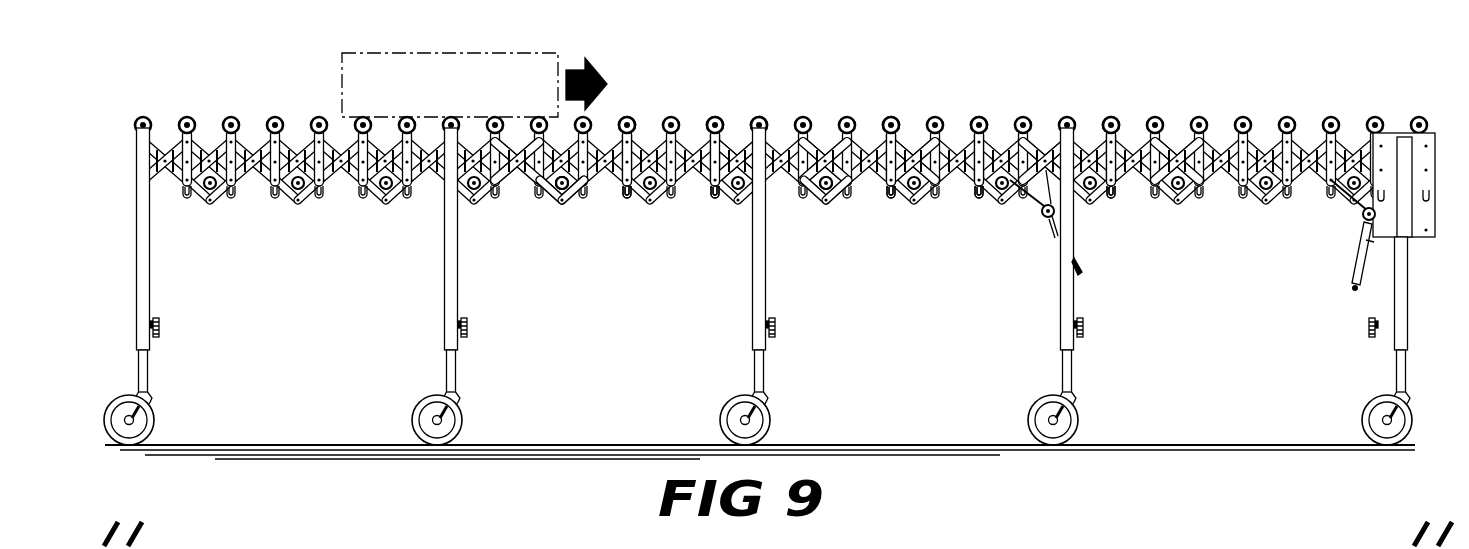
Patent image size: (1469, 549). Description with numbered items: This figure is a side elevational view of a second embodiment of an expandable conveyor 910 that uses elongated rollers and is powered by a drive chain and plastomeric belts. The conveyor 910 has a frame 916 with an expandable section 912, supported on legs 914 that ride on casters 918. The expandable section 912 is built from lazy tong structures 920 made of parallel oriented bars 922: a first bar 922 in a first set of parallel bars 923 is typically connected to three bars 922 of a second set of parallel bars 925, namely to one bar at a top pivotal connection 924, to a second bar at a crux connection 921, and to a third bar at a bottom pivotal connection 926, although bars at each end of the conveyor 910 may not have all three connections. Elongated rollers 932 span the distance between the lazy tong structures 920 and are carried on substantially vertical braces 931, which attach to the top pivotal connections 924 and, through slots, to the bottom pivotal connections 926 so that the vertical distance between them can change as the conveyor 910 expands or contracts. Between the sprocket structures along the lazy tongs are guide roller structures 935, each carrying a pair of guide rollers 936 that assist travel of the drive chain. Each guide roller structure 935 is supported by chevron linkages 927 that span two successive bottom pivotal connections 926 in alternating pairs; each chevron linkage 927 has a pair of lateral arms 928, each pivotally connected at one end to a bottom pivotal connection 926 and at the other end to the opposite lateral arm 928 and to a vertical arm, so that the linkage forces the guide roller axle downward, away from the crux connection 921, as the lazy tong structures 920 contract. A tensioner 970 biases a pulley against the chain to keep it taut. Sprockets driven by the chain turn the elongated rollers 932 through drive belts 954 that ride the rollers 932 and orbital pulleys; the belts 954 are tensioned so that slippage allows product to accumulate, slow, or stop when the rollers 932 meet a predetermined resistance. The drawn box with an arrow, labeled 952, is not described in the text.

The conveyor 910 is at (1283, 85).
The expandable section 912 is at (997, 131).
The legs 914 is at (145, 287).
The frame 916 is at (1385, 237).
The casters 918 is at (150, 412).
The lazy tong structures 920 is at (1039, 131).
The crux connection 921 is at (1097, 140).
The parallel oriented bars 922 is at (1140, 136).
The first set of parallel bars 923 is at (823, 133).
The top pivotal connection 924 is at (727, 135).
The second set of parallel bars 925 is at (917, 133).
The bottom pivotal connection 926 is at (707, 197).
The chevron linkages 927 is at (578, 201).
The lateral arms 928 is at (556, 200).
The braces 931 is at (531, 200).
The elongated rollers 932 is at (621, 118).
The guide roller structures 935 is at (837, 200).
The guide rollers 936 is at (903, 200).
The article 952 is at (560, 88).
The drive belts 954 is at (799, 105).
The tensioner 970 is at (1055, 224).